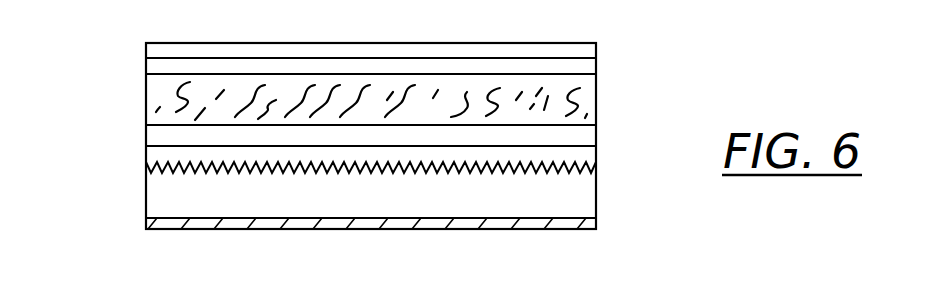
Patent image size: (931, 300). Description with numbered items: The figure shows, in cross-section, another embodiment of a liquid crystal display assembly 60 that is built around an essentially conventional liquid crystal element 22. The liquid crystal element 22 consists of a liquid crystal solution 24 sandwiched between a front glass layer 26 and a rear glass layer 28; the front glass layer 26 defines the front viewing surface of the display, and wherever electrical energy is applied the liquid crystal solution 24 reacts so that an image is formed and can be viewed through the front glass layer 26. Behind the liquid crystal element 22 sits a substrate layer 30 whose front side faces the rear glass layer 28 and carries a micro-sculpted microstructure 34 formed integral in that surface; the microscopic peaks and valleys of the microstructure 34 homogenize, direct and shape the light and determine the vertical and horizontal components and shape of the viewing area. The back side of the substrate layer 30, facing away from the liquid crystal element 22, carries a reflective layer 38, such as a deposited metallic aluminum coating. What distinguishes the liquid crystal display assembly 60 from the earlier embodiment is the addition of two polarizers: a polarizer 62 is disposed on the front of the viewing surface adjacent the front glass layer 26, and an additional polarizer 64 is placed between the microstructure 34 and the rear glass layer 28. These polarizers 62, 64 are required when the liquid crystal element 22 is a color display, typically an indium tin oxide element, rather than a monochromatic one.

The liquid crystal display assembly 60 is at (133, 42).
The polarizer 62 is at (236, 46).
The front glass layer 26 is at (154, 63).
The liquid crystal solution 24 is at (154, 91).
The rear glass layer 28 is at (157, 134).
The liquid crystal element 22 is at (602, 62).
The polarizer 64 is at (596, 158).
The microstructure 34 is at (373, 163).
The substrate layer 30 is at (596, 196).
The reflective layer 38 is at (530, 229).